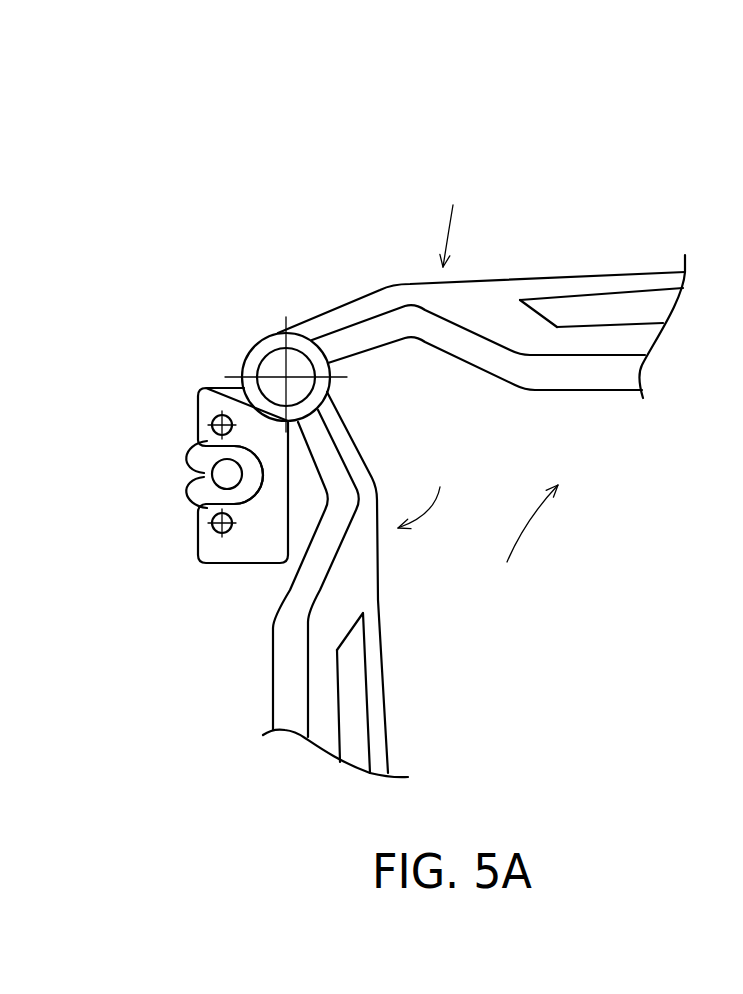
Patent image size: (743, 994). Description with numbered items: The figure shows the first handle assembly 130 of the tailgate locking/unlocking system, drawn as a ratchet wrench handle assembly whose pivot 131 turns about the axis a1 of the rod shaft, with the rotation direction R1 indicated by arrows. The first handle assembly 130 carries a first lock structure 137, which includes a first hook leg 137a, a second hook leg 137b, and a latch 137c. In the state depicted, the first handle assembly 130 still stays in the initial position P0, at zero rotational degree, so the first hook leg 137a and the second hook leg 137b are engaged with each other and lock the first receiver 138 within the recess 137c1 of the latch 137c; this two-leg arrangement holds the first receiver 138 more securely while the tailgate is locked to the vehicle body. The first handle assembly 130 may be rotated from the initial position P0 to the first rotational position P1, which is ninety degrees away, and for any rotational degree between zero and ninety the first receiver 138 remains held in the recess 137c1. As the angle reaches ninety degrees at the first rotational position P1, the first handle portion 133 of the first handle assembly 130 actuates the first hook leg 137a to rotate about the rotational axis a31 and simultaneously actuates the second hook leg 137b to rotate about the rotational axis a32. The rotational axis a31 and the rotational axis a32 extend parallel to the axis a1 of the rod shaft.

The first handle assembly 130 is at (245, 668).
The pivot portion 131 is at (308, 344).
The first handle portion 133 is at (610, 291).
The first lock structure 137 is at (130, 65).
The first hook leg 137a is at (200, 500).
The second hook leg 137b is at (193, 453).
The latch 137c is at (253, 548).
The recess 137c1 is at (193, 480).
The first receiver 138 is at (228, 474).
The axis of the rod shaft a1 is at (287, 378).
The rotational axis of the first hook leg a31 is at (220, 533).
The rotational axis of the second hook leg a32 is at (213, 420).
The initial position P0 is at (428, 491).
The first rotational position P1 is at (455, 218).
The rotation direction R1 is at (479, 383).